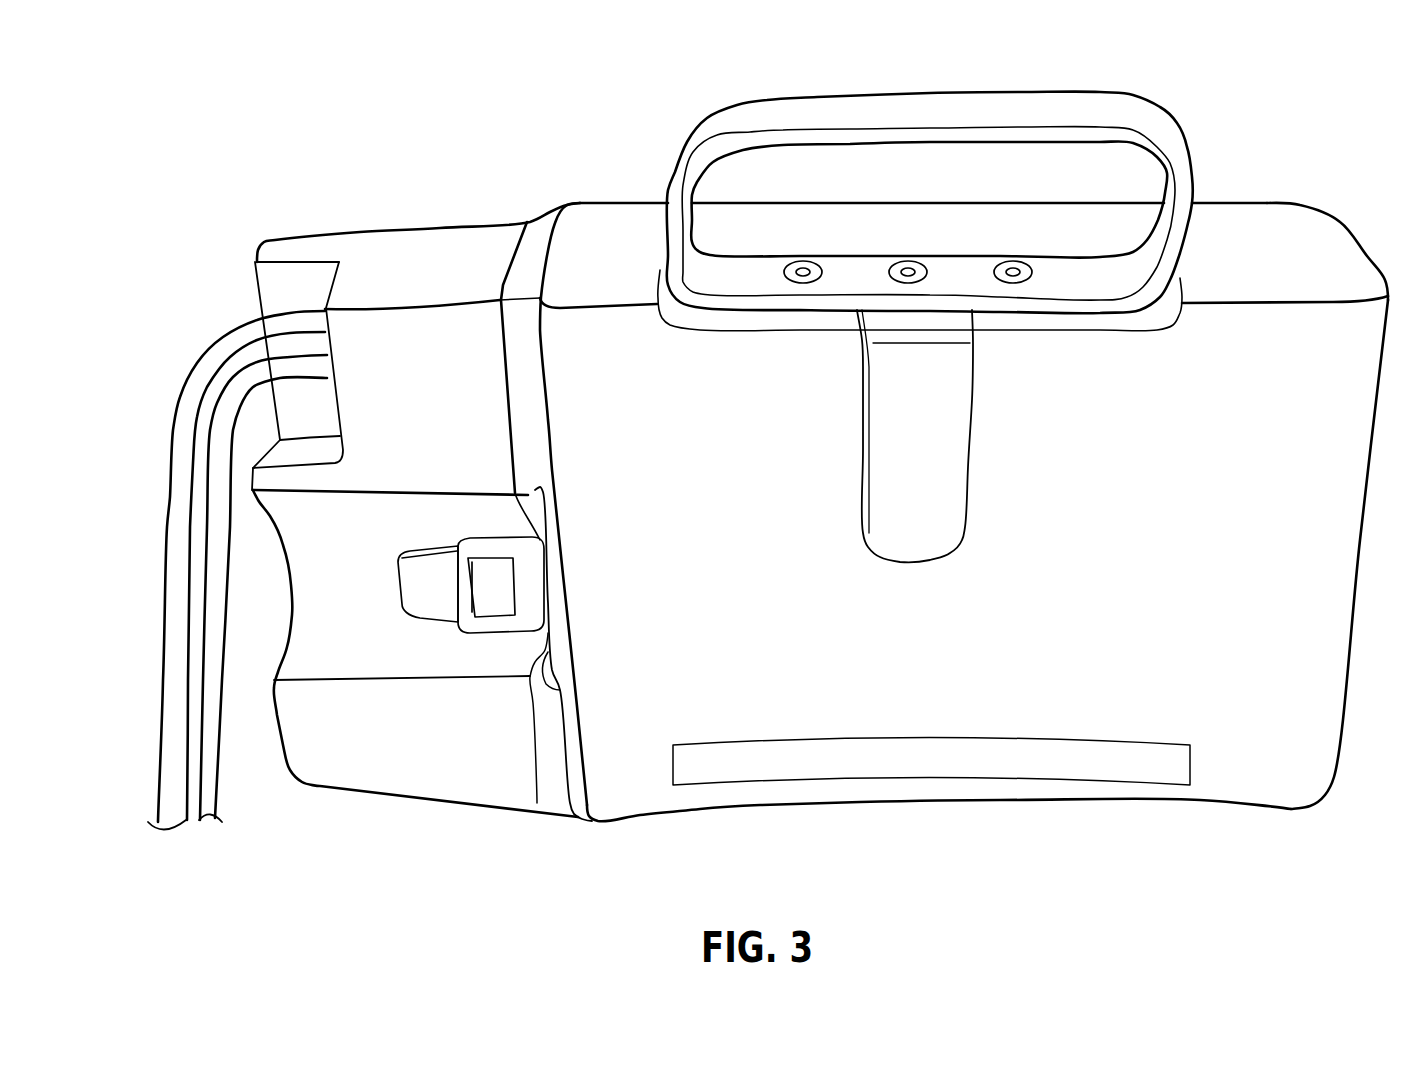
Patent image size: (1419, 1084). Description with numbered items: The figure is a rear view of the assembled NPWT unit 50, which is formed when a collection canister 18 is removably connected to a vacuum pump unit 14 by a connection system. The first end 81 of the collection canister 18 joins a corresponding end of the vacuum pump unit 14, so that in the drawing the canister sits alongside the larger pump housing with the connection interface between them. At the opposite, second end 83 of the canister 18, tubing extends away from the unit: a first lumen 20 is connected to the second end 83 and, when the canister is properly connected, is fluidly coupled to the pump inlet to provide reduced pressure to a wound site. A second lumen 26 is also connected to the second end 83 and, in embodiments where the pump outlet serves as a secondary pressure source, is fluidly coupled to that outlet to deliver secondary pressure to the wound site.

The vacuum pump unit 14 is at (1302, 266).
The collection canister 18 is at (404, 275).
The first lumen 20 is at (226, 340).
The second lumen 26 is at (237, 378).
The NPWT unit 50 is at (458, 138).
The first end of collection canister 81 is at (543, 258).
The second end of canister 83 is at (282, 742).